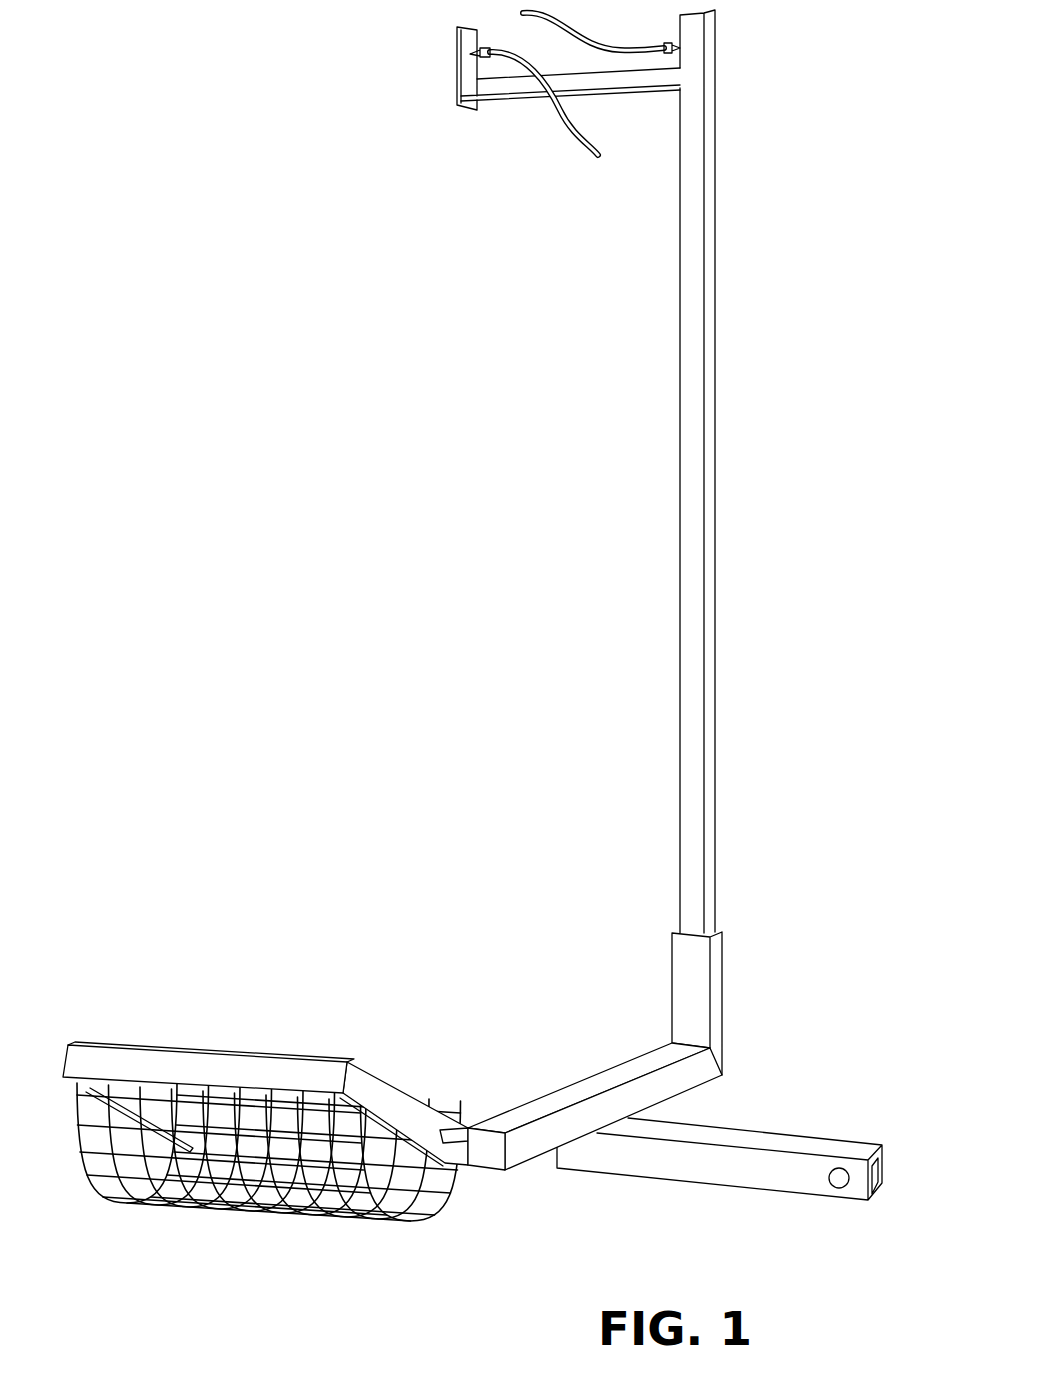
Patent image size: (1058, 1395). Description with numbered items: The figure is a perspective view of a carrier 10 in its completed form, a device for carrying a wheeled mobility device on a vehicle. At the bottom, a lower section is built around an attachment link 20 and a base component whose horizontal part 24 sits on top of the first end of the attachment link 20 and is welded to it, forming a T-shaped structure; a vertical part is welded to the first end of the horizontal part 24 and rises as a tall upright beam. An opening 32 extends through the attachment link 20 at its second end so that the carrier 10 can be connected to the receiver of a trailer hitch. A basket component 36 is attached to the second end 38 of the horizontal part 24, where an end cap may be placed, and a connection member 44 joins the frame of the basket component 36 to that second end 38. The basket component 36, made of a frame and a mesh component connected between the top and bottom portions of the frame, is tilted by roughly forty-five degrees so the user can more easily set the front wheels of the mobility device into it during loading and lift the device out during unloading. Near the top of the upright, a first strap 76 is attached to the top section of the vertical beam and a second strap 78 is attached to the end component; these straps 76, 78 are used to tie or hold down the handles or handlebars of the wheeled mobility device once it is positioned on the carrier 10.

The carrier 10 is at (472, 644).
The attachment link 20 is at (719, 1185).
The horizontal part 24 is at (610, 1080).
The opening 32 is at (837, 1190).
The basket component 36 is at (248, 1030).
The second end 38 is at (487, 1152).
The connection member 44 is at (456, 1126).
The first strap 76 is at (590, 37).
The second strap 78 is at (552, 128).